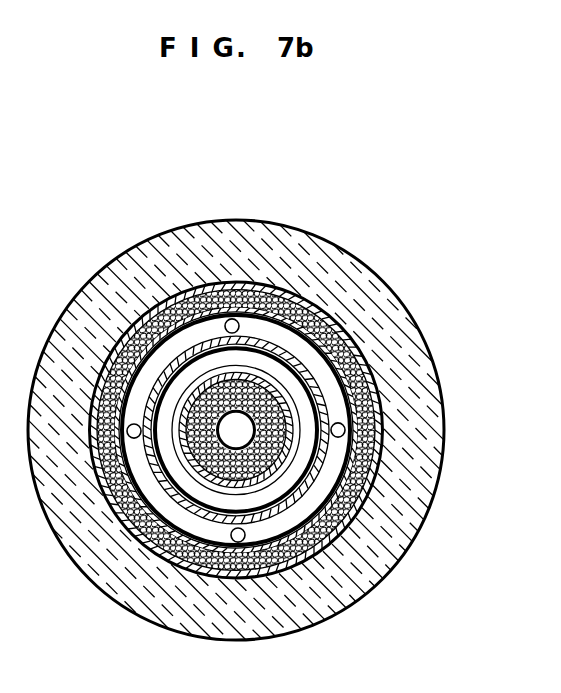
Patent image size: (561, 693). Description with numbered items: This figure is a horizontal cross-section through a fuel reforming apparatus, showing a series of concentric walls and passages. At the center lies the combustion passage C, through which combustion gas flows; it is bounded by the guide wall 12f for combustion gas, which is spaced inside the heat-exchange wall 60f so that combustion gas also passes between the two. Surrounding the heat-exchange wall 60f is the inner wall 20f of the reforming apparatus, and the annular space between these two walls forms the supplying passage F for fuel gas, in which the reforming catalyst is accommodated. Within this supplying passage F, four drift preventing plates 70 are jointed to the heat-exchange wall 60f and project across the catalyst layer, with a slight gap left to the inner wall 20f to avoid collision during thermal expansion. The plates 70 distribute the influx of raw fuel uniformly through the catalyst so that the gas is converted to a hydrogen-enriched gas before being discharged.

The drift preventing plate 70 is at (327, 313).
The combustion passage C is at (310, 400).
The supplying passage for fuel gas F is at (370, 453).
The guide wall for combustion gas 12f is at (412, 503).
The heat-exchange wall 60f is at (402, 553).
The inner wall of the reforming apparatus 20f is at (380, 585).